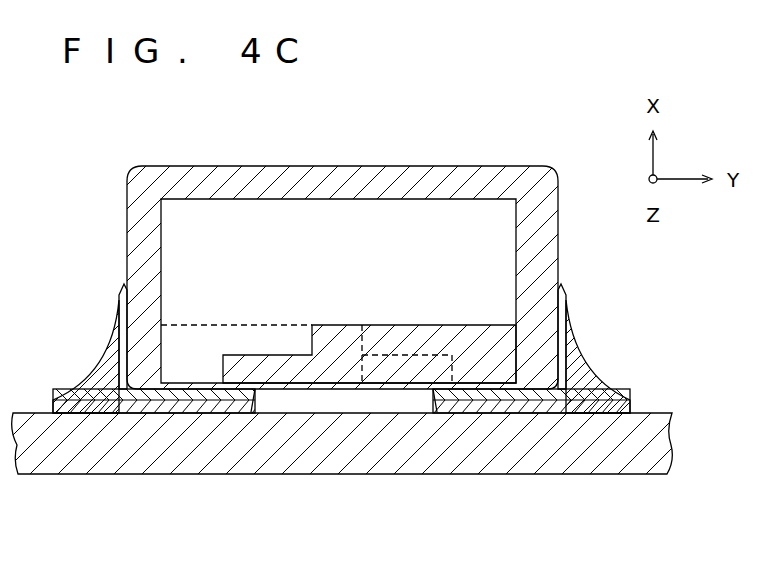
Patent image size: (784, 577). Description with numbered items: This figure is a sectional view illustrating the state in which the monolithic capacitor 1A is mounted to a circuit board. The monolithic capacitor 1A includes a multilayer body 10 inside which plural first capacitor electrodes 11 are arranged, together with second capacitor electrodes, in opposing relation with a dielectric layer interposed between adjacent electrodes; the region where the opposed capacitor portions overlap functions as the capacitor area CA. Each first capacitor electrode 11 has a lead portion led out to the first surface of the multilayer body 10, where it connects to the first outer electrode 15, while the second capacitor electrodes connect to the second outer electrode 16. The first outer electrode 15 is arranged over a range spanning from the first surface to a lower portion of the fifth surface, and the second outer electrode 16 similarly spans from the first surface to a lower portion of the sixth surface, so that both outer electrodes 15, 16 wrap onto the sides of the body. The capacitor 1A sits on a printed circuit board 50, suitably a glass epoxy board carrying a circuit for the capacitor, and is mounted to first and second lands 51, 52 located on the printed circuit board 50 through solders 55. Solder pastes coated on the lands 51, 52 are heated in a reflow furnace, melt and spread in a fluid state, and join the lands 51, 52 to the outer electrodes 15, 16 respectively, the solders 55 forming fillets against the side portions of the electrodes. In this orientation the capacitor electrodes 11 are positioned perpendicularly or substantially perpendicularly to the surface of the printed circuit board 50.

The monolithic capacitor 1A is at (362, 106).
The multilayer body 10 is at (462, 167).
The first capacitor electrode 11 is at (300, 227).
The first outer electrode 15 is at (118, 330).
The second outer electrode 16 is at (573, 330).
The printed circuit board 50 is at (402, 474).
The first land 51 is at (197, 408).
The second land 52 is at (498, 413).
The solder 55 is at (95, 362).